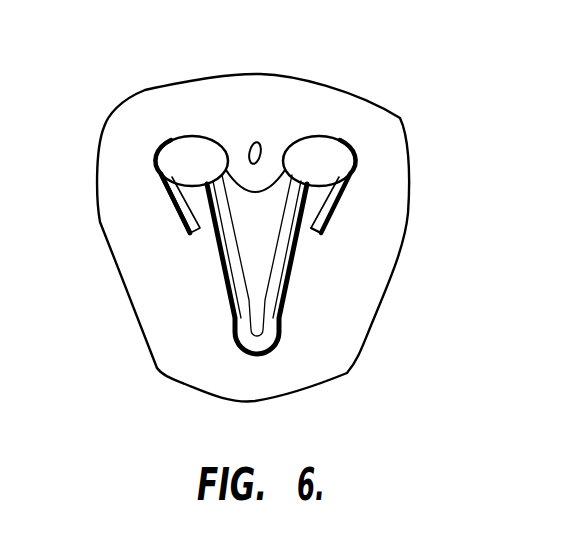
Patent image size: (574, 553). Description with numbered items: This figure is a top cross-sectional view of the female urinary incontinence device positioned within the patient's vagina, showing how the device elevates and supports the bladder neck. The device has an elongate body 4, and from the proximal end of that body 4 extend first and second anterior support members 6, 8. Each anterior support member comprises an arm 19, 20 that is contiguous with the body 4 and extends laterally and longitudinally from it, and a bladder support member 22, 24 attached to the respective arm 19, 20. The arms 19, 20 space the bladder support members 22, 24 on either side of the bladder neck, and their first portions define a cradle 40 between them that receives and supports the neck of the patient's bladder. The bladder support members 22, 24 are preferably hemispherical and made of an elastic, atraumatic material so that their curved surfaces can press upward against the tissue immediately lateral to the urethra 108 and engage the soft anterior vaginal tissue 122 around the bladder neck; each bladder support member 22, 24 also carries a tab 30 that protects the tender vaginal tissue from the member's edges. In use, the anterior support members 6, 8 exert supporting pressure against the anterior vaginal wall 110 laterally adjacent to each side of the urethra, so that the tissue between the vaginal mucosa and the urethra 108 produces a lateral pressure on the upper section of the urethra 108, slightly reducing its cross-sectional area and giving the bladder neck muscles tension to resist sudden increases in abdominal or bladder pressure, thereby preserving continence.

The elongate body 4 is at (222, 361).
The first anterior support member 6 is at (149, 146).
The second anterior support member 8 is at (358, 200).
The arm 19 is at (218, 242).
The arm 20 is at (287, 250).
The bladder support member 22 is at (196, 157).
The bladder support member 24 is at (330, 157).
The tab 30 is at (165, 197).
The cradle 40 is at (252, 330).
The urethra 108 is at (258, 143).
The anterior vaginal wall 110 is at (234, 162).
The anterior vaginal tissue 122 is at (322, 231).